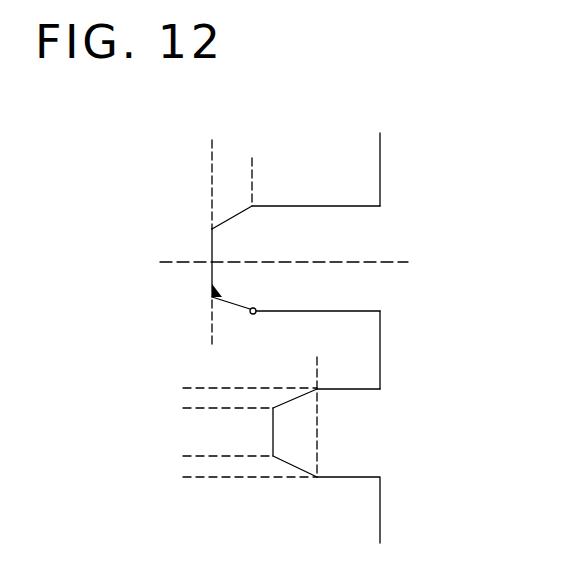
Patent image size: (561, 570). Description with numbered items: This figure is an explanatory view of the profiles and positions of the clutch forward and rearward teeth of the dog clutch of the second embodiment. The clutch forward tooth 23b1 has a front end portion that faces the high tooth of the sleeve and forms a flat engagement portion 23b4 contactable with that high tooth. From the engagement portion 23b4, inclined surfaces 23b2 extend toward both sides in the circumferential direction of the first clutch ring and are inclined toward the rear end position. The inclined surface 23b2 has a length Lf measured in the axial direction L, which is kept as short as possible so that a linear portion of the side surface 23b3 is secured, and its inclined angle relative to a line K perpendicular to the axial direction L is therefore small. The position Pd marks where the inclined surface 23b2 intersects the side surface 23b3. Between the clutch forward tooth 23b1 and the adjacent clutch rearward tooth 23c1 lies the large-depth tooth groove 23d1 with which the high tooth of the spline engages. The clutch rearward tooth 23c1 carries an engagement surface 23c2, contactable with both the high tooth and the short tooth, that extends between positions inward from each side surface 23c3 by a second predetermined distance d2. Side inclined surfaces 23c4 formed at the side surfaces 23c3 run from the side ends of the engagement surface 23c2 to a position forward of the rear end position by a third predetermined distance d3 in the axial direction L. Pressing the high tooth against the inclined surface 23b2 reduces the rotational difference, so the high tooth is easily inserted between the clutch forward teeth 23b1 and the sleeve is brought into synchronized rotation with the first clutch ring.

The clutch forward tooth 23b1 is at (177, 170).
The inclined surface 23b2 is at (212, 295).
The side surface 23b3 is at (313, 311).
The engagement portion 23b4 is at (212, 252).
The clutch rearward tooth 23c1 is at (152, 426).
The engagement surface 23c2 is at (273, 432).
The side surface 23c3 is at (341, 389).
The side inclined surface 23c4 is at (296, 387).
The large-depth tooth groove 23d1 is at (380, 343).
The length of inclined surface in axial direction Lf is at (277, 189).
The axial direction L is at (368, 243).
The line perpendicular to axial direction K is at (175, 307).
The position where inclined surface intersects side surface Pd is at (250, 313).
The second predetermined distance d2 is at (192, 500).
The third predetermined distance d3 is at (380, 360).